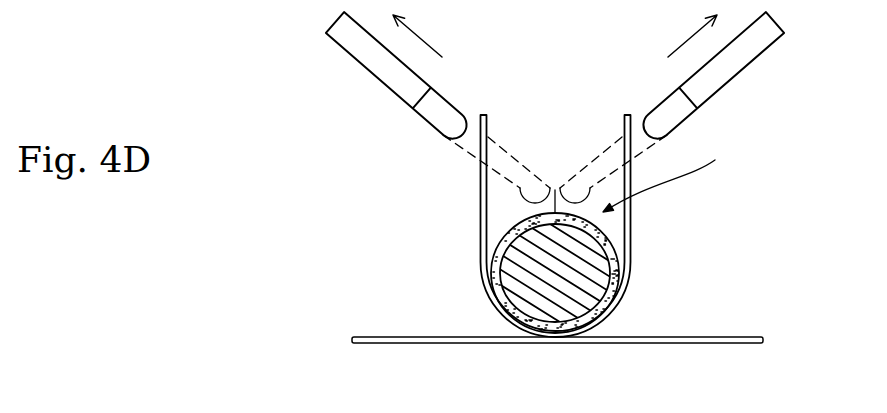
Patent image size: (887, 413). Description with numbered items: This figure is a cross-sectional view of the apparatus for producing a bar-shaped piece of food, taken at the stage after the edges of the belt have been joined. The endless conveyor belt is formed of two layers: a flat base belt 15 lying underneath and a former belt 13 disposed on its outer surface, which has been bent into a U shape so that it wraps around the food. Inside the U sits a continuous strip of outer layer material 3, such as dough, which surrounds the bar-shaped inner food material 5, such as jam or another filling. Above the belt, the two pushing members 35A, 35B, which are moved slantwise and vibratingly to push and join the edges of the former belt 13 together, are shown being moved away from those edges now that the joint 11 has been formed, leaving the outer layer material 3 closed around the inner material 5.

The pushing member 35A is at (743, 55).
The pushing member 35B is at (377, 57).
The former belt 13 is at (482, 210).
The weld seam / joint 11 is at (675, 170).
The outer layer material 3 is at (620, 280).
The food material 5 is at (510, 291).
The base belt 15 is at (628, 343).